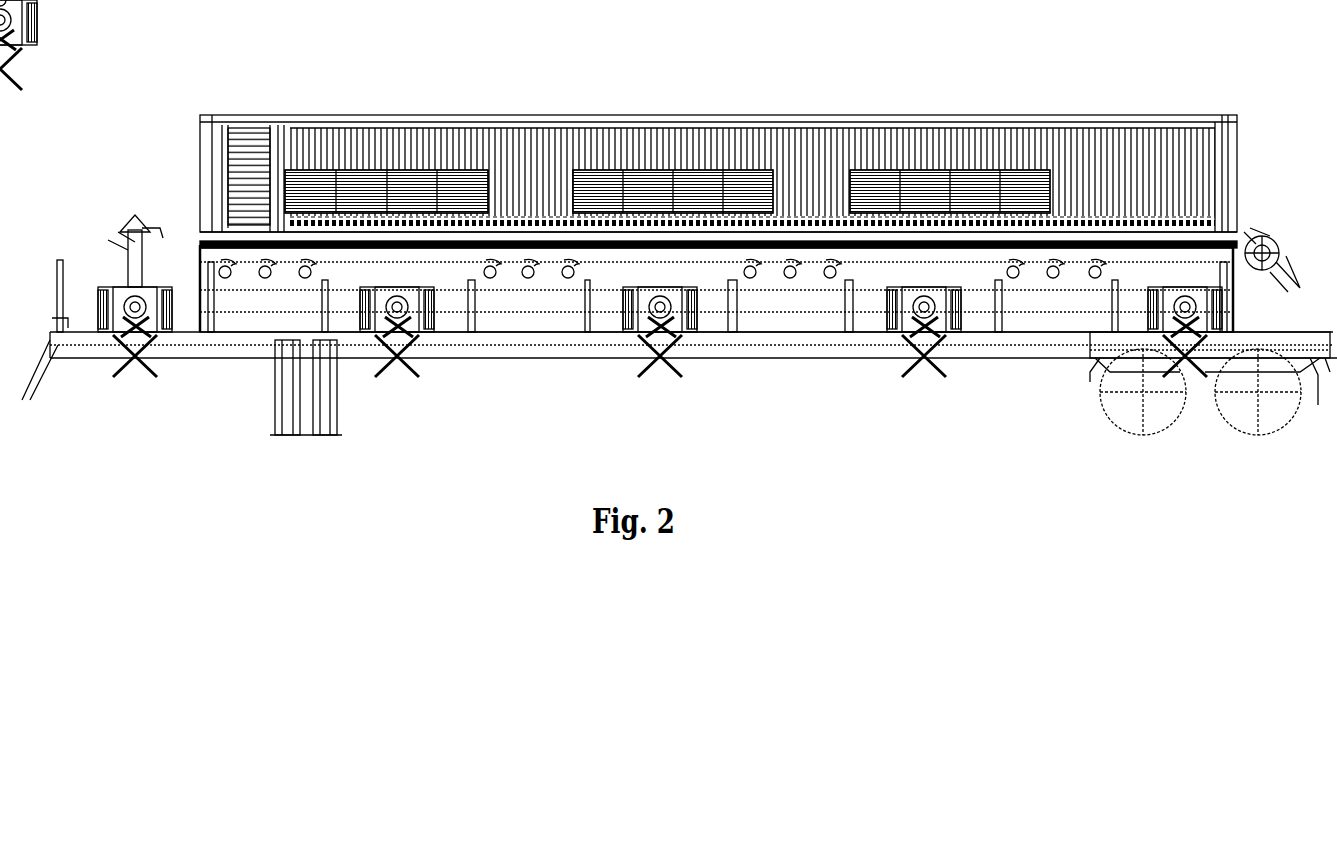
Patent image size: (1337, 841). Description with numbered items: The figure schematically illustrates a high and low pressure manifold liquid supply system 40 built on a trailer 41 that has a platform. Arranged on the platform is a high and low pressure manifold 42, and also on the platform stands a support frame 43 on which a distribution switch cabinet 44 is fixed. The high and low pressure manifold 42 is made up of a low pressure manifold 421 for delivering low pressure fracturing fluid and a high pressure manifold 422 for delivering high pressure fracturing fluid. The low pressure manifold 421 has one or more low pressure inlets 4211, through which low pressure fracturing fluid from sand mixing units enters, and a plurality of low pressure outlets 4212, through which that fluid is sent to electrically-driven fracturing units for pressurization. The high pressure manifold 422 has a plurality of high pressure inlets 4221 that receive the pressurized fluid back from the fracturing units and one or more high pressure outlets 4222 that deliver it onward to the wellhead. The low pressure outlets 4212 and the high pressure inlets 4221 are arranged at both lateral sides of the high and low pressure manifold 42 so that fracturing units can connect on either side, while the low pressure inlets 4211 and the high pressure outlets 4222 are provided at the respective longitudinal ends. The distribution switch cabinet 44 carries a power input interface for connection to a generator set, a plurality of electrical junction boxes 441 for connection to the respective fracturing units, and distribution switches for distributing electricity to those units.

The high and low pressure manifold liquid supply system 40 is at (668, 235).
The trailer 41 is at (90, 348).
The high and low pressure manifold 42 is at (663, 229).
The low pressure manifold 421 is at (663, 203).
The low pressure inlets 4211 is at (1283, 226).
The low pressure outlets 4212 is at (1053, 280).
The high pressure manifold 422 is at (611, 222).
The high pressure inlets 4221 is at (398, 394).
The high pressure outlets 4222 is at (114, 214).
The support frame 43 is at (203, 246).
The distribution switch cabinet 44 is at (718, 144).
The electrical junction boxes 441 is at (936, 172).